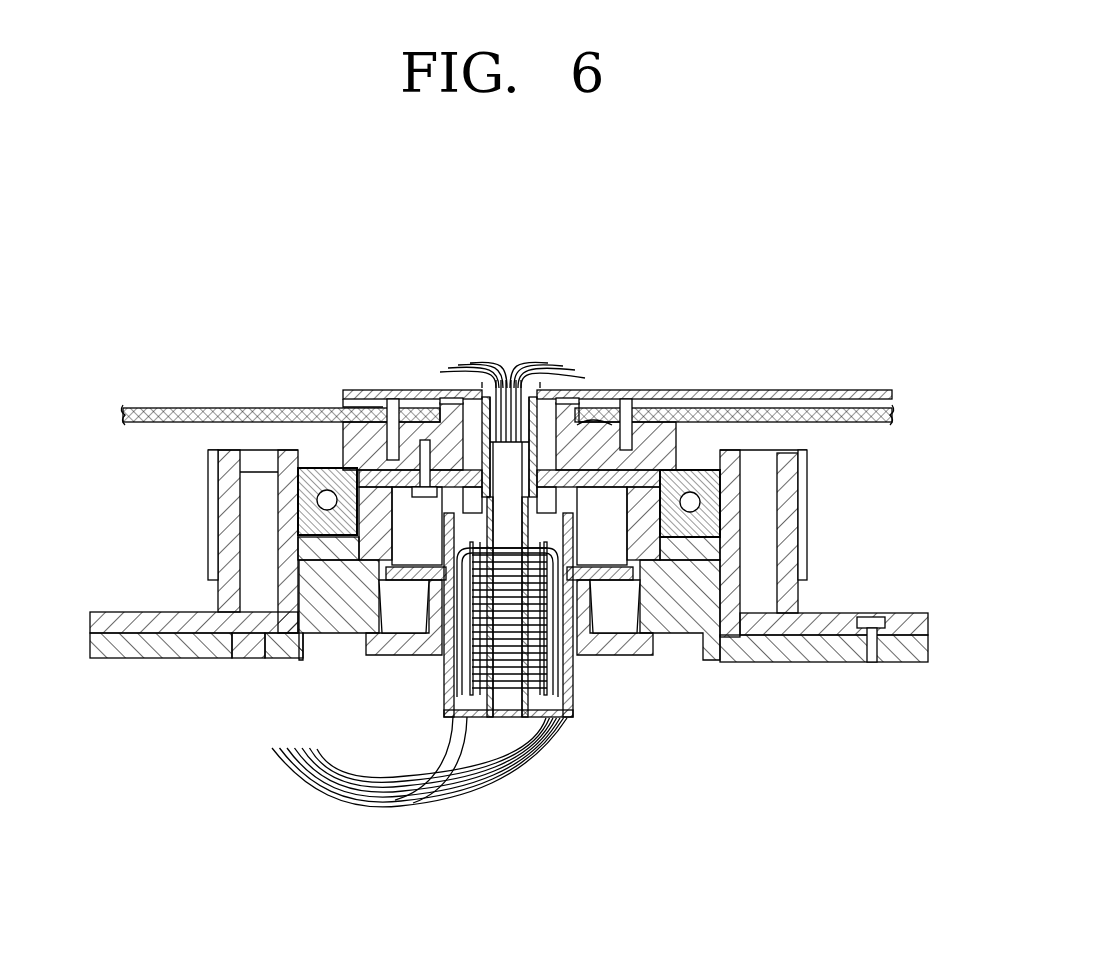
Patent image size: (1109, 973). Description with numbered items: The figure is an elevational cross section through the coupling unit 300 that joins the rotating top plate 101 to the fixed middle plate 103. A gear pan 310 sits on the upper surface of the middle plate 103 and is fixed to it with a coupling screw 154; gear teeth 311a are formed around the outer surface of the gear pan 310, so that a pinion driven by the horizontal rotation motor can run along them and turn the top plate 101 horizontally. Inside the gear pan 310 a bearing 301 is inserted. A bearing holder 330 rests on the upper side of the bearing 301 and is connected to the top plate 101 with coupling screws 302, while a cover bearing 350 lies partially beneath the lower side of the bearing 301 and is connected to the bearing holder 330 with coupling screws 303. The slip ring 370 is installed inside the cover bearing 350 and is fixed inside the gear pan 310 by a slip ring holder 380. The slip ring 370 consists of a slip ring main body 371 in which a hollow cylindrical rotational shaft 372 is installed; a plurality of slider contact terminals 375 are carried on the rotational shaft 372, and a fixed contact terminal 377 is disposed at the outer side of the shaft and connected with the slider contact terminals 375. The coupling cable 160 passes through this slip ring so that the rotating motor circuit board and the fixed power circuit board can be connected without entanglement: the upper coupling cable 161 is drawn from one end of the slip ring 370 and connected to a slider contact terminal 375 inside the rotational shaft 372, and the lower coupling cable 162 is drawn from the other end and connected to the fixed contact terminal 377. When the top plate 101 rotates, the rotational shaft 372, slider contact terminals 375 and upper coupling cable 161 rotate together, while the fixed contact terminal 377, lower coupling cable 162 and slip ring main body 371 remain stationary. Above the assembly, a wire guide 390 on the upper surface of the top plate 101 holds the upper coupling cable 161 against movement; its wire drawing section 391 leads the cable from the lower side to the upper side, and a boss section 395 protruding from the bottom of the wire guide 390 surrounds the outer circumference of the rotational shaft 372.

The top plate 101 is at (895, 412).
The middle plate 103 is at (95, 650).
The coupling screw 154 is at (870, 617).
The coupling cable 160 is at (428, 588).
The upper coupling cable 161 is at (503, 365).
The lower coupling cable 162 is at (410, 810).
The coupling unit 300 is at (340, 372).
The bearing 301 is at (305, 447).
The coupling screws 302 is at (652, 425).
The coupling screws 303 is at (432, 430).
The gear pan 310 is at (556, 543).
The gear teeth 311a is at (803, 545).
The bearing holder 330 is at (365, 425).
The cover bearing 350 is at (353, 548).
The slip ring 370 is at (566, 714).
The slip ring main body 371 is at (577, 678).
The rotational shaft 372 is at (530, 700).
The slider contact terminals 375 is at (512, 700).
The fixed contact terminal 377 is at (535, 705).
The slip ring holder 380 is at (330, 640).
The wire guide 390 is at (740, 390).
The wire drawing section 391 is at (548, 386).
The boss section 395 is at (540, 442).